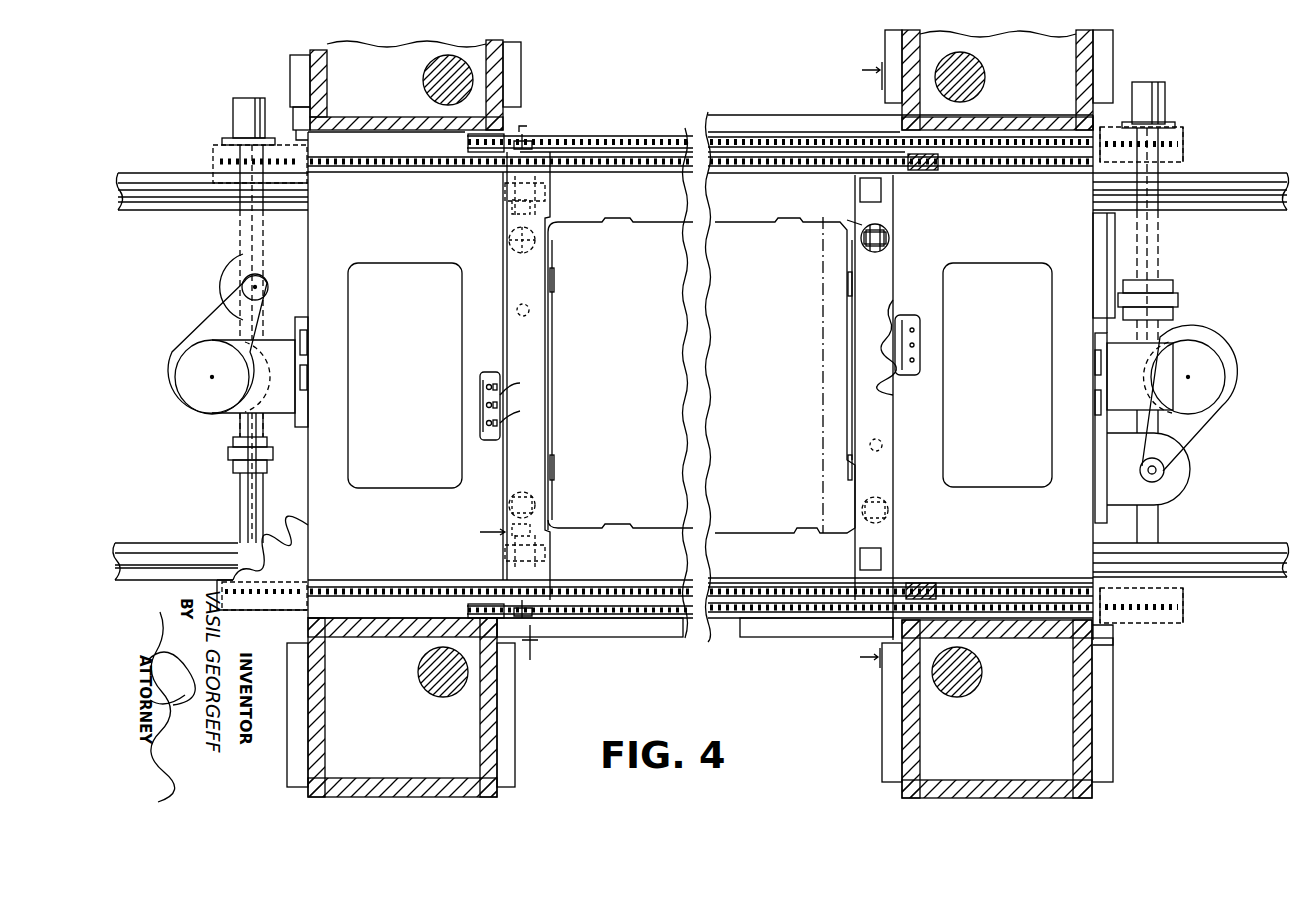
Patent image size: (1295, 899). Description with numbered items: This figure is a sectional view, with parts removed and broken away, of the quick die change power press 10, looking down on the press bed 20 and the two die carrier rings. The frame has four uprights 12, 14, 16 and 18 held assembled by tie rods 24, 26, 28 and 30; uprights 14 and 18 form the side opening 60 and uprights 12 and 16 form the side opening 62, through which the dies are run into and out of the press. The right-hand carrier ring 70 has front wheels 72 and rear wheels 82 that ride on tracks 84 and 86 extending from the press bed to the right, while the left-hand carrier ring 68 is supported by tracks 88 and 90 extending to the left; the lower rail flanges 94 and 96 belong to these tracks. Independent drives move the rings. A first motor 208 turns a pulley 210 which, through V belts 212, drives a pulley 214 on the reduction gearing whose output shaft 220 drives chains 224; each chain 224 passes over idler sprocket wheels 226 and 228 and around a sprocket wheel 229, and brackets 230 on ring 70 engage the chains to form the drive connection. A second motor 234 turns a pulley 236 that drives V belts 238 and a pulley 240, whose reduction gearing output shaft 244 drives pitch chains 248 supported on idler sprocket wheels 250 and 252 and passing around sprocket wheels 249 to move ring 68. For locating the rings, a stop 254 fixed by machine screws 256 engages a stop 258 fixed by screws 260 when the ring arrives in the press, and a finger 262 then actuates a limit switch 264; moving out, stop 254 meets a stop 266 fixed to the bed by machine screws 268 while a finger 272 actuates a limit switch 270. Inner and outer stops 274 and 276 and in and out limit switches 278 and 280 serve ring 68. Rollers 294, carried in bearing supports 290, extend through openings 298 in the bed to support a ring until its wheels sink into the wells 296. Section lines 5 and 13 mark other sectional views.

The section line 5- 5 is at (862, 362).
The quick die change power press 10 is at (1141, 72).
The upright 12 is at (497, 797).
The section line 13- 13 is at (512, 594).
The upright 14 is at (1092, 795).
The upright 16 is at (518, 80).
The upright 18 is at (899, 48).
The press bed 20 is at (794, 580).
The tie rod 24 is at (467, 691).
The tie rod 26 is at (423, 90).
The tie rod 28 is at (985, 80).
The tie rod 30 is at (982, 680).
The opening 60 is at (1022, 135).
The opening 62 is at (357, 622).
The carrier ring 68 is at (300, 558).
The carrier ring 70 is at (548, 332).
The front wheels 72 is at (558, 554).
The rear wheels 82 is at (543, 196).
The track 84 is at (1243, 578).
The track 86 is at (1257, 173).
The track 88 is at (177, 546).
The track 90 is at (163, 210).
The right upper rail lower flange 94 is at (1230, 203).
The left upper rail 96 is at (167, 185).
The first motor 208 is at (1180, 482).
The pulley 210 is at (1165, 470).
The V belts 212 is at (1203, 438).
The pulley 214 is at (1228, 394).
The output shaft 220 is at (1160, 526).
The chain 224 is at (1018, 170).
The idler sprocket wheel 226 is at (1150, 124).
The idler sprocket wheel 228 is at (1183, 136).
The sprocket wheel 229 is at (468, 144).
The bracket 230 is at (532, 142).
The second motor 234 is at (220, 291).
The pulley 236 is at (260, 252).
The V belts 238 is at (207, 320).
The pulley 240 is at (174, 390).
The output shaft 244 is at (243, 423).
The pitch chain 248 is at (430, 170).
The sprocket wheel 249 is at (939, 162).
The idler sprocket wheel 250 is at (217, 150).
The idler sprocket wheel 252 is at (232, 114).
The stop 254 is at (520, 383).
The machine screws 256 is at (520, 423).
The stop 258 is at (478, 440).
The screws 260 is at (495, 376).
The finger 262 is at (890, 625).
The limit switch 264 is at (890, 650).
The stop 266 is at (1095, 400).
The machine screws 268 is at (1100, 380).
The limit switch 270 is at (1112, 645).
The finger 272 is at (519, 624).
The inner stop 274 is at (910, 312).
The outer stop 276 is at (308, 351).
The in limit switch 278 is at (528, 128).
The out limit switch 280 is at (295, 112).
The bearing supports 290 is at (881, 226).
The roller 294 is at (550, 248).
The wells 296 is at (548, 212).
The openings 298 is at (862, 225).